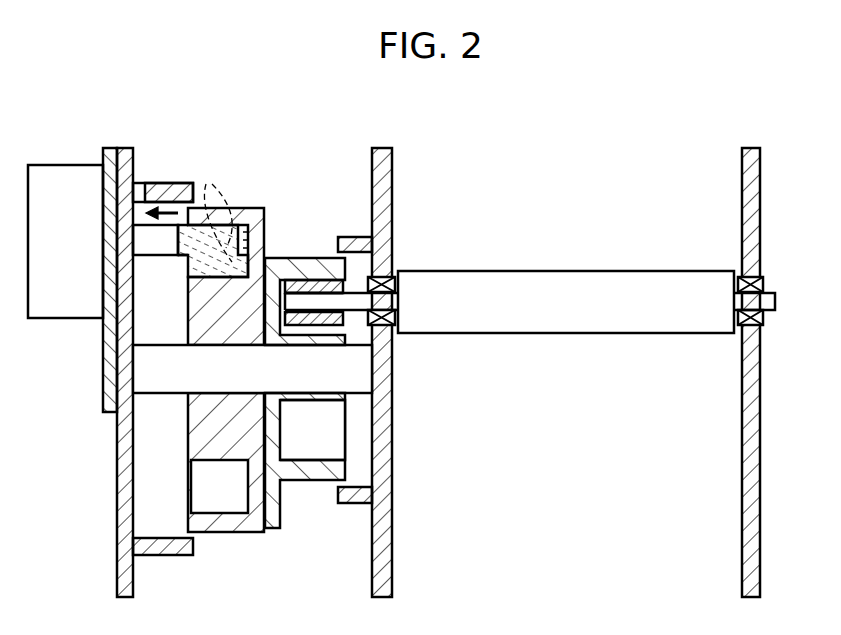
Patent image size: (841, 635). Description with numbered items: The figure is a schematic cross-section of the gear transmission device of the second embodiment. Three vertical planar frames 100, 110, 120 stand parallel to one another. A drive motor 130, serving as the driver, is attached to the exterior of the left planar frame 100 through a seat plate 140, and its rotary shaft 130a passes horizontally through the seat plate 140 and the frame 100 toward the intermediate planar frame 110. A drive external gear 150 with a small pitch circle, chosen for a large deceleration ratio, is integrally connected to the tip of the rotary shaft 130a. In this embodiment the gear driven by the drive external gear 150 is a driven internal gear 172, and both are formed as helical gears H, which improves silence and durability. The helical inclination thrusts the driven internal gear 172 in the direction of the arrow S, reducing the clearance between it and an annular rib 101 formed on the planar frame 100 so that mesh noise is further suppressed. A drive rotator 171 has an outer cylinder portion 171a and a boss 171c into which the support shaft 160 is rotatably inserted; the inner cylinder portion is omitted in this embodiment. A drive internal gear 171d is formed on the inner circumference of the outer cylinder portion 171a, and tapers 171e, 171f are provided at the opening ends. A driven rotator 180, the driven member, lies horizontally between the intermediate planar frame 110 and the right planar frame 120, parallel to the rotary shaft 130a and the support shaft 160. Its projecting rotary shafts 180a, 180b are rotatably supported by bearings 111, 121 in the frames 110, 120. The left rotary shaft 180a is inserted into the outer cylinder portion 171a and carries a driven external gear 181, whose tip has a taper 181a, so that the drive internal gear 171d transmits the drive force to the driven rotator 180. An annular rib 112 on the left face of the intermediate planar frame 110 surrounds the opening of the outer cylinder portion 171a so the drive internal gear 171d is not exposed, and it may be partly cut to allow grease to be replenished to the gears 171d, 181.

The planar frame 100 is at (120, 505).
The annular rib 101 is at (160, 190).
The intermediate planar frame 110 is at (392, 552).
The bearing 111 is at (395, 284).
The annular rib 112 is at (352, 237).
The planar frame 120 is at (760, 505).
The bearing 121 is at (763, 318).
The drive motor 130 is at (68, 165).
The rotary shaft 130a is at (140, 225).
The seat plate 140 is at (106, 375).
The drive external gear 150 is at (232, 232).
The support shaft 160 is at (149, 349).
The drive rotator 171 is at (312, 492).
The outer cylinder portion 171a is at (275, 265).
The boss 171c is at (298, 402).
The drive internal gear 171d is at (338, 288).
The taper 171e is at (335, 460).
The taper 171f is at (335, 400).
The driven internal gear 172 is at (188, 430).
The driven rotator 180 is at (570, 271).
The rotary shaft 180a is at (355, 306).
The rotary shaft 180b is at (775, 302).
The driven external gear 181 is at (340, 282).
The taper 181a is at (273, 328).
The helical gears H is at (216, 212).
The arrow S is at (159, 245).